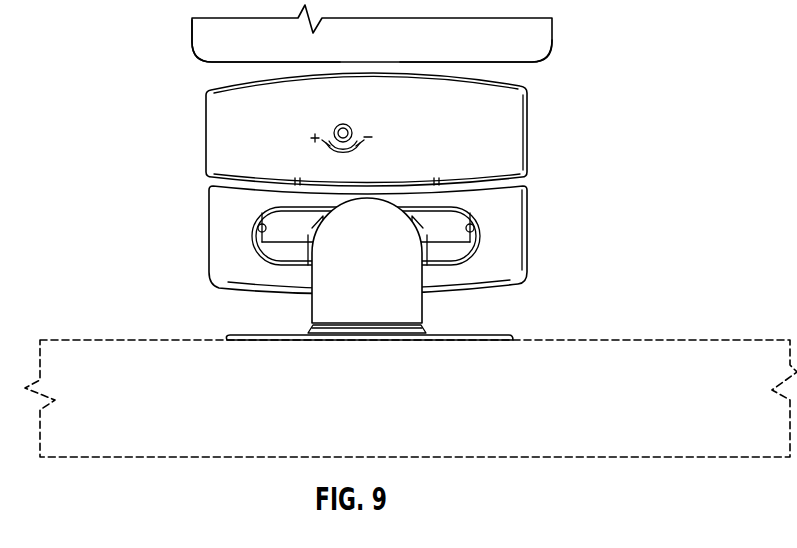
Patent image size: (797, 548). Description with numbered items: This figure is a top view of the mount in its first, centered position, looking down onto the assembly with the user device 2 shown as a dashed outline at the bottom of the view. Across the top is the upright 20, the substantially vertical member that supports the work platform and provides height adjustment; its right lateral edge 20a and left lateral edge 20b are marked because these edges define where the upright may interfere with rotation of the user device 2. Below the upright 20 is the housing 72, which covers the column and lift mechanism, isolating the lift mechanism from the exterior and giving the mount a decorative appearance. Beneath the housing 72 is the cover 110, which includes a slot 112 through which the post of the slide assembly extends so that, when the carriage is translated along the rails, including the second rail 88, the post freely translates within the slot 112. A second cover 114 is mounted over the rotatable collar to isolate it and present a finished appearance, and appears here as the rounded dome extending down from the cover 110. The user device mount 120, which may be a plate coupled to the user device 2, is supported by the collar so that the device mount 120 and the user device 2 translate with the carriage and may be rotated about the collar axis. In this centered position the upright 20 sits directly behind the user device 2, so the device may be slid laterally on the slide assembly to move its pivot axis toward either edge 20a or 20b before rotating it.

The user device 2 is at (651, 458).
The upright 20 is at (555, 25).
The right lateral edge 20a is at (547, 61).
The left lateral edge 20b is at (192, 53).
The housing 72 is at (530, 133).
The second rail 88 is at (287, 234).
The cover 110 is at (522, 282).
The slot 112 is at (455, 255).
The cover 114 is at (422, 320).
The user device mount 120 is at (507, 335).